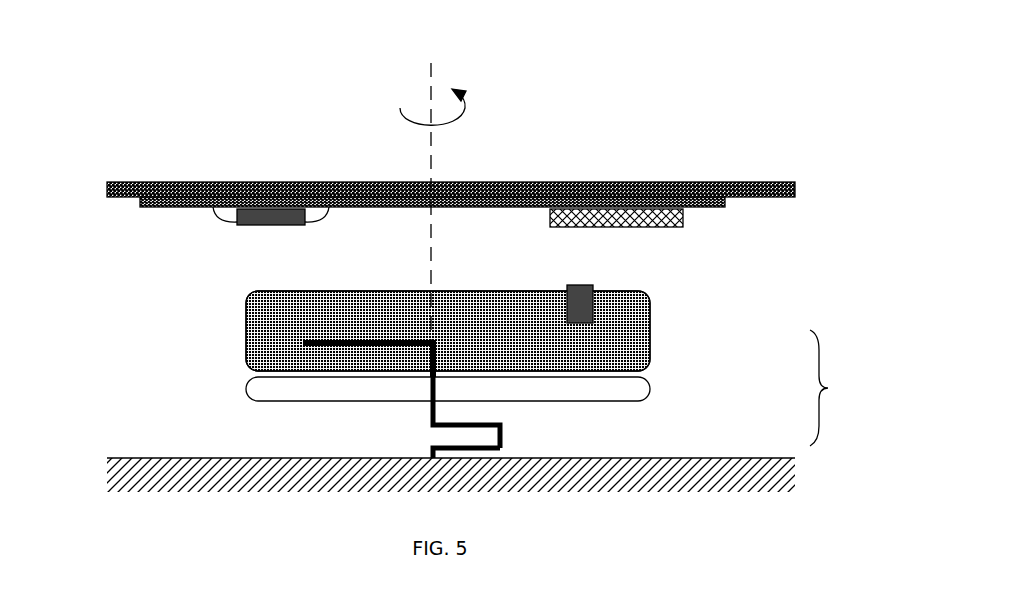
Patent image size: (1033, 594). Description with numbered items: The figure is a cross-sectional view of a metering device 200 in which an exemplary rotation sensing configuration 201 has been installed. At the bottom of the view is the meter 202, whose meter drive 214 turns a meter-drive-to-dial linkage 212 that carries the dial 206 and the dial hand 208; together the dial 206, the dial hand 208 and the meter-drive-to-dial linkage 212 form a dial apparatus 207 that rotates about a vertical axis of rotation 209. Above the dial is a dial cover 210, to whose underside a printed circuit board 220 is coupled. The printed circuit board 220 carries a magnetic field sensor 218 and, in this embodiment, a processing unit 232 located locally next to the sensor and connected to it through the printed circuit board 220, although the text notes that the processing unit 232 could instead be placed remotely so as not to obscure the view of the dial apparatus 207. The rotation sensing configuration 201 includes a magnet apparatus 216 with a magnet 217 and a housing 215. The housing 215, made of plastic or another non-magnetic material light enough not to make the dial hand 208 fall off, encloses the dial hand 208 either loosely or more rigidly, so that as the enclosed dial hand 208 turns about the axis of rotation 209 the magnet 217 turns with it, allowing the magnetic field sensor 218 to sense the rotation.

The metering device 200 is at (657, 137).
The rotation sensing configuration 201 is at (111, 375).
The meter 202 is at (228, 480).
The dial 206 is at (648, 393).
The dial apparatus 207 is at (838, 388).
The dial hand 208 is at (325, 343).
The axis of rotation 209 is at (433, 189).
The dial cover 210 is at (727, 184).
The meter-drive-to-dial linkage 212 is at (502, 424).
The meter drive 214 is at (502, 448).
The housing 215 is at (632, 357).
The magnet apparatus 216 is at (664, 325).
The magnet 217 is at (593, 300).
The magnetic field sensor 218 is at (238, 223).
The printed circuit board 220 is at (140, 208).
The processing unit 232 is at (688, 226).